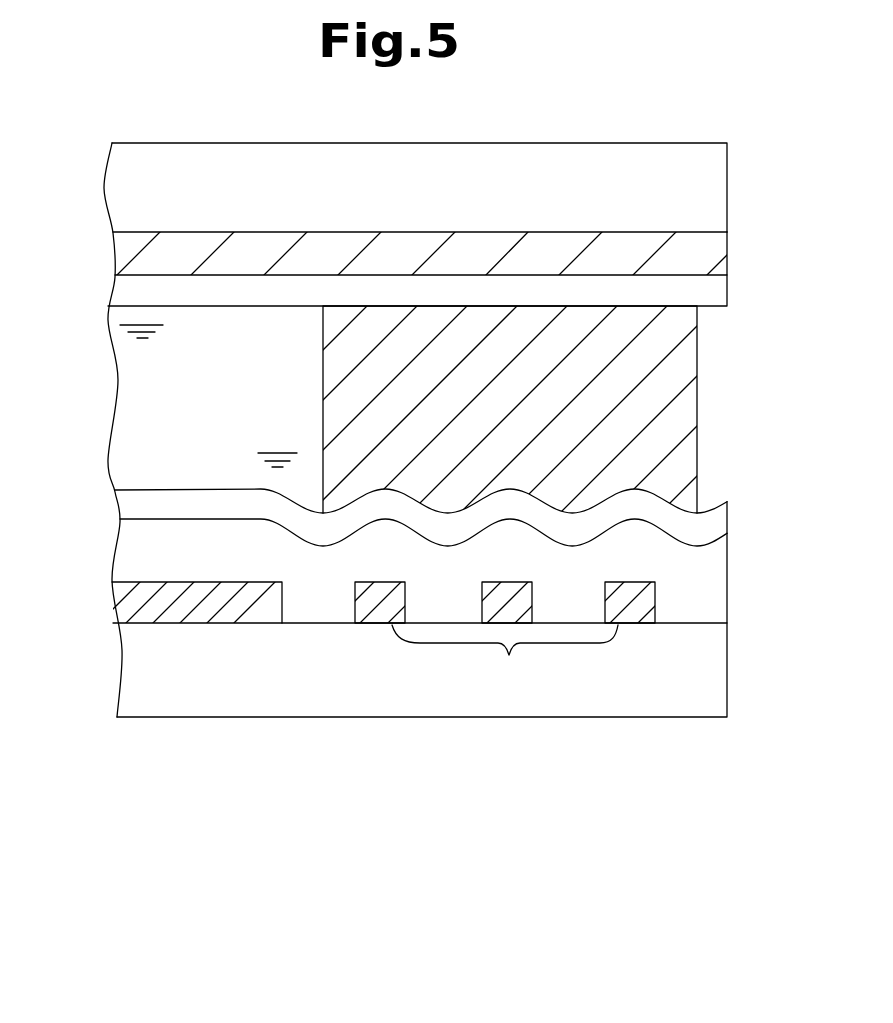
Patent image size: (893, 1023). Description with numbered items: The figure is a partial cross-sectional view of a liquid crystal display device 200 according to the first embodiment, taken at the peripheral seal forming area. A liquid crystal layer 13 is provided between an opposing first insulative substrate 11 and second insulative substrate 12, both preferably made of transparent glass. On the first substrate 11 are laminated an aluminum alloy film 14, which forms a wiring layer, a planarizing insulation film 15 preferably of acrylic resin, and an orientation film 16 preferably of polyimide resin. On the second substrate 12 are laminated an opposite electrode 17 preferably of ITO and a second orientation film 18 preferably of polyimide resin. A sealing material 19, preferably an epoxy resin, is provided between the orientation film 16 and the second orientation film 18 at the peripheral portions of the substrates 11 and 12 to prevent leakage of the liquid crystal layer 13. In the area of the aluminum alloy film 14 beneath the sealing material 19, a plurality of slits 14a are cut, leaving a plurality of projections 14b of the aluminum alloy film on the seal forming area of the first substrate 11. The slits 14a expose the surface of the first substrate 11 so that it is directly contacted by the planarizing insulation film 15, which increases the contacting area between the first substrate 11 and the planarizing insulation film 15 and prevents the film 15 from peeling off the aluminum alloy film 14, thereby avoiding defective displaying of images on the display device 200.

The first insulative substrate 11 is at (727, 672).
The second insulative substrate 12 is at (727, 192).
The liquid crystal layer 13 is at (135, 392).
The aluminum alloy film 14 is at (219, 624).
The slits 14a is at (353, 593).
The projections 14b is at (509, 617).
The planarizing insulation film 15 is at (727, 572).
The orientation film 16 is at (727, 512).
The opposite electrode 17 is at (727, 243).
The second orientation film 18 is at (727, 291).
The sealing material 19 is at (697, 404).
The liquid crystal display device 200 is at (194, 803).